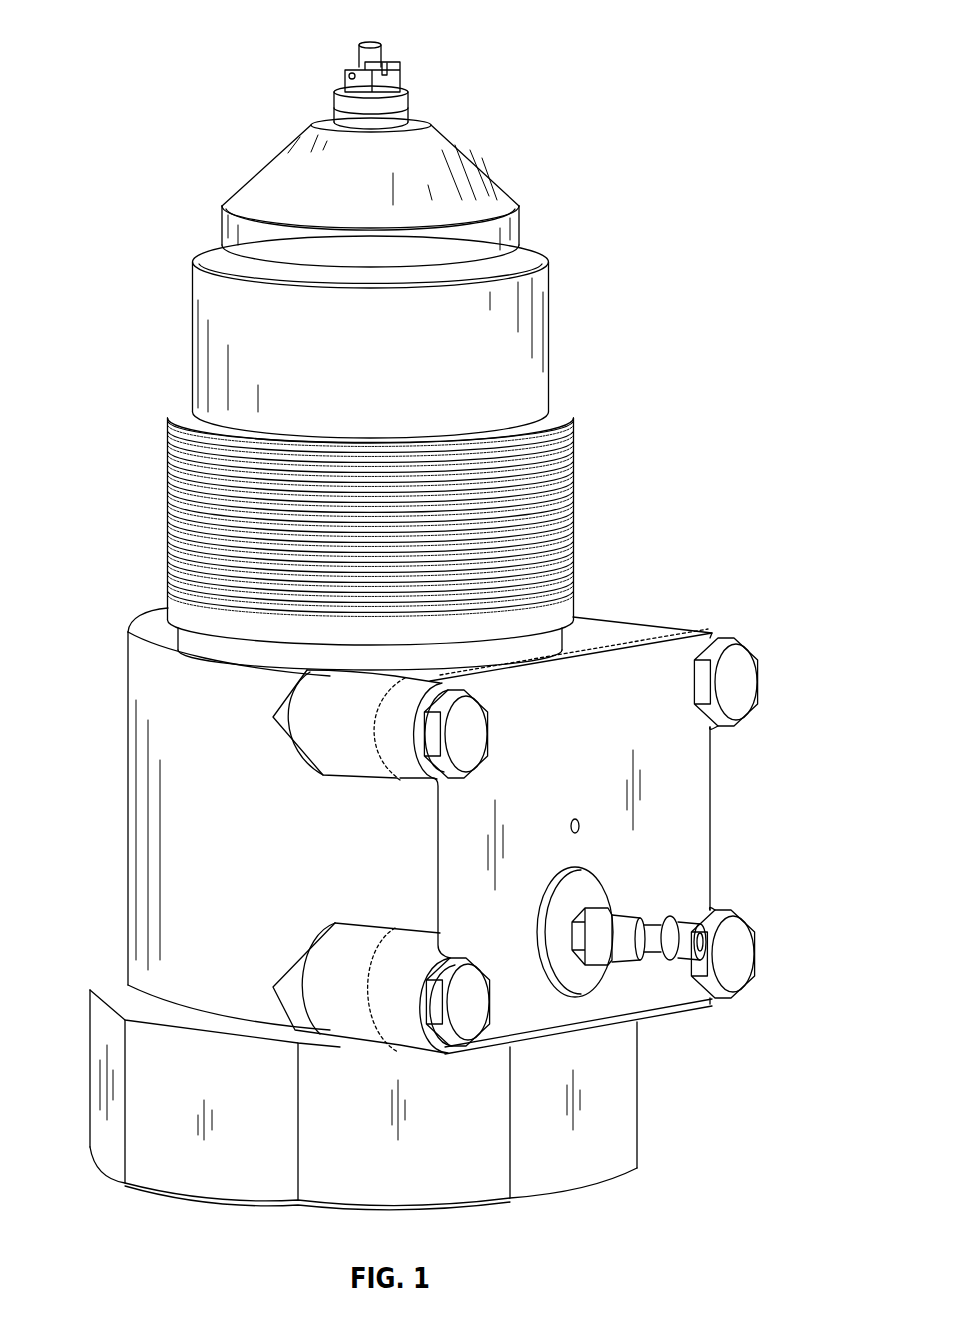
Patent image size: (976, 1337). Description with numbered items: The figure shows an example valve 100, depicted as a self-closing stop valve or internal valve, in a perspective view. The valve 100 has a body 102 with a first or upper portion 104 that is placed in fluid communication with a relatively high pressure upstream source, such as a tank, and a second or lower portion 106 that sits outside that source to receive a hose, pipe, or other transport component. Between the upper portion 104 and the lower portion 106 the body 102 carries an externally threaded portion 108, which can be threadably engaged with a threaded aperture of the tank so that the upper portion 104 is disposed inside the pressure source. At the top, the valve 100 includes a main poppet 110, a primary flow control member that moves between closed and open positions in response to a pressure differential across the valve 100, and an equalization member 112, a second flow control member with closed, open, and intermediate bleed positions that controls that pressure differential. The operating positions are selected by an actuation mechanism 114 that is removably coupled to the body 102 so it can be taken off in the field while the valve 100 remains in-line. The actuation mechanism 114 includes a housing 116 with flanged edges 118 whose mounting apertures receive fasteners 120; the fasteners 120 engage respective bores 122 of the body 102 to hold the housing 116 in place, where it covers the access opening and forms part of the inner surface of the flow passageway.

The valve 100 is at (128, 42).
The body 102 is at (128, 800).
The first or upper portion 104 is at (192, 337).
The second or lower portion 106 is at (95, 1082).
The externally threaded portion 108 is at (167, 499).
The main poppet 110 is at (483, 166).
The equalization member 112 is at (410, 97).
The actuation mechanism 114 is at (758, 768).
The housing 116 is at (693, 846).
The flanged edges 118 is at (713, 632).
The fasteners 120 is at (735, 683).
The bores 122 is at (316, 715).